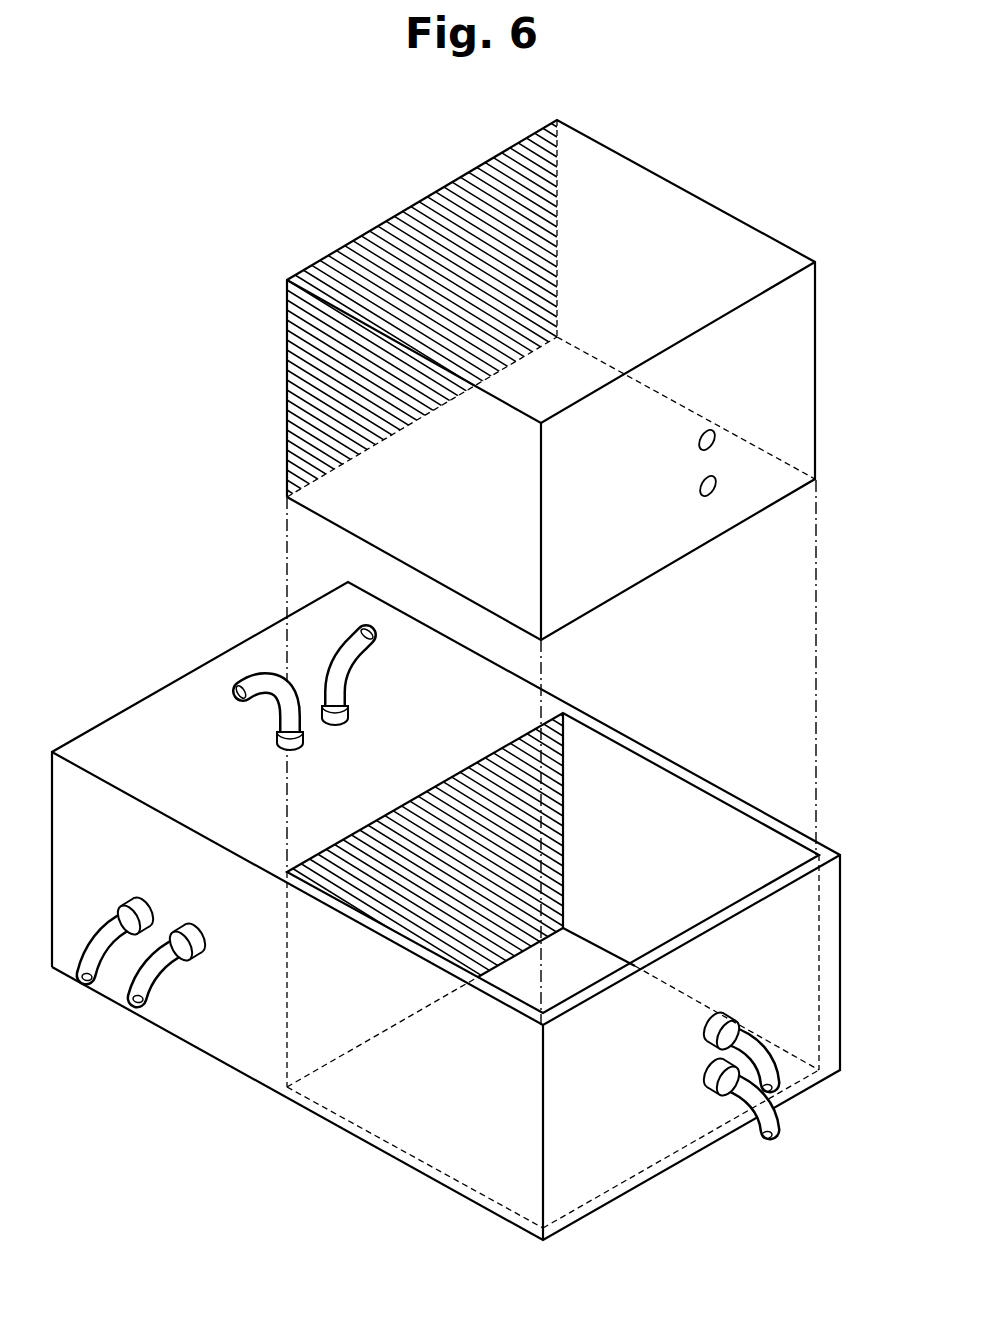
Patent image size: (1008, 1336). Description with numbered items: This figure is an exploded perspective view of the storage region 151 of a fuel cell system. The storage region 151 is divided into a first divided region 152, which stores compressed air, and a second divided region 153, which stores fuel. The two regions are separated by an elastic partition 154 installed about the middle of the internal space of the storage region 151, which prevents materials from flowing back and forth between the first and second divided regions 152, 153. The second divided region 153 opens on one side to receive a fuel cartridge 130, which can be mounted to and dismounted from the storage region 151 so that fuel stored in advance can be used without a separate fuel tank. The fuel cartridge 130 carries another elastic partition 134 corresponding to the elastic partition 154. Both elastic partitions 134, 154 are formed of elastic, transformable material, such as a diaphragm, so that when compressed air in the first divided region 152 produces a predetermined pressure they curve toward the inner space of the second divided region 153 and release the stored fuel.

The fuel cartridge 130 is at (586, 328).
The elastic partition 134 is at (358, 247).
The storage region 151 is at (446, 892).
The first divided region 152 is at (265, 838).
The second divided region 153 is at (513, 976).
The elastic partition 154 is at (523, 730).